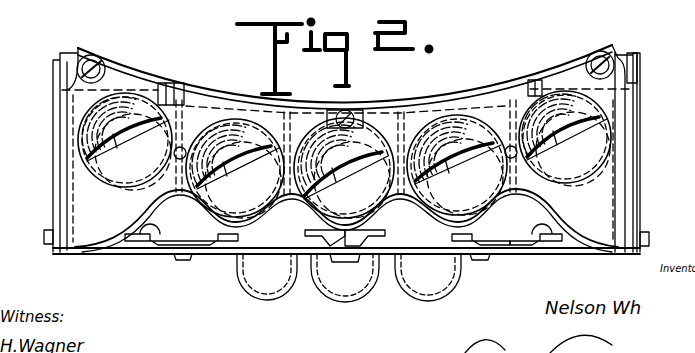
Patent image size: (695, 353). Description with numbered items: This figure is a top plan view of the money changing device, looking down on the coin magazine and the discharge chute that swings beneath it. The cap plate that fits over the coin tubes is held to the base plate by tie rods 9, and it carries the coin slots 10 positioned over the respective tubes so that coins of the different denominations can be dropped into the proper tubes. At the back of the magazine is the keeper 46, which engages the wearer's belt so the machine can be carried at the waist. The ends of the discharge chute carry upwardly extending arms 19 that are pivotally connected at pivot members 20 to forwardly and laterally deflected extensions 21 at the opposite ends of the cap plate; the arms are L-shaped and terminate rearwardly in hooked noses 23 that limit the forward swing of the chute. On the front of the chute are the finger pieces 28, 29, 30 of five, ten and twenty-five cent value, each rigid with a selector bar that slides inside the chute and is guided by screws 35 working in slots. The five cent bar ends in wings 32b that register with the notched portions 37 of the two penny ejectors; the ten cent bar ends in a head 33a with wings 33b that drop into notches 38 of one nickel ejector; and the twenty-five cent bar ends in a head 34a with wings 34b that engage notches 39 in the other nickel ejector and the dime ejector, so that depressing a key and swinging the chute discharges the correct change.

The tie rods 9 is at (187, 115).
The coin slots 10 is at (95, 173).
The upwardly extending arms 19 is at (634, 180).
The pivot members 20 is at (50, 236).
The forwardly and laterally deflected extensions 21 is at (105, 254).
The hooked noses 23 is at (638, 66).
The five cent finger piece 28 is at (265, 299).
The ten cent finger piece 29 is at (362, 298).
The twenty-five cent finger piece 30 is at (447, 297).
The wings of the five cent selector bar head 32b is at (130, 254).
The head of the ten cent selector bar 33a is at (306, 256).
The wings of the ten cent selector bar head 33b is at (380, 250).
The head of the twenty-five cent selector bar 34a is at (553, 250).
The wings of the twenty-five cent selector bar head 34b is at (571, 250).
The screws 35 is at (183, 262).
The notched portions 37 is at (152, 254).
The notches 38 is at (308, 298).
The notches 39 is at (482, 258).
The keeper 46 is at (473, 115).